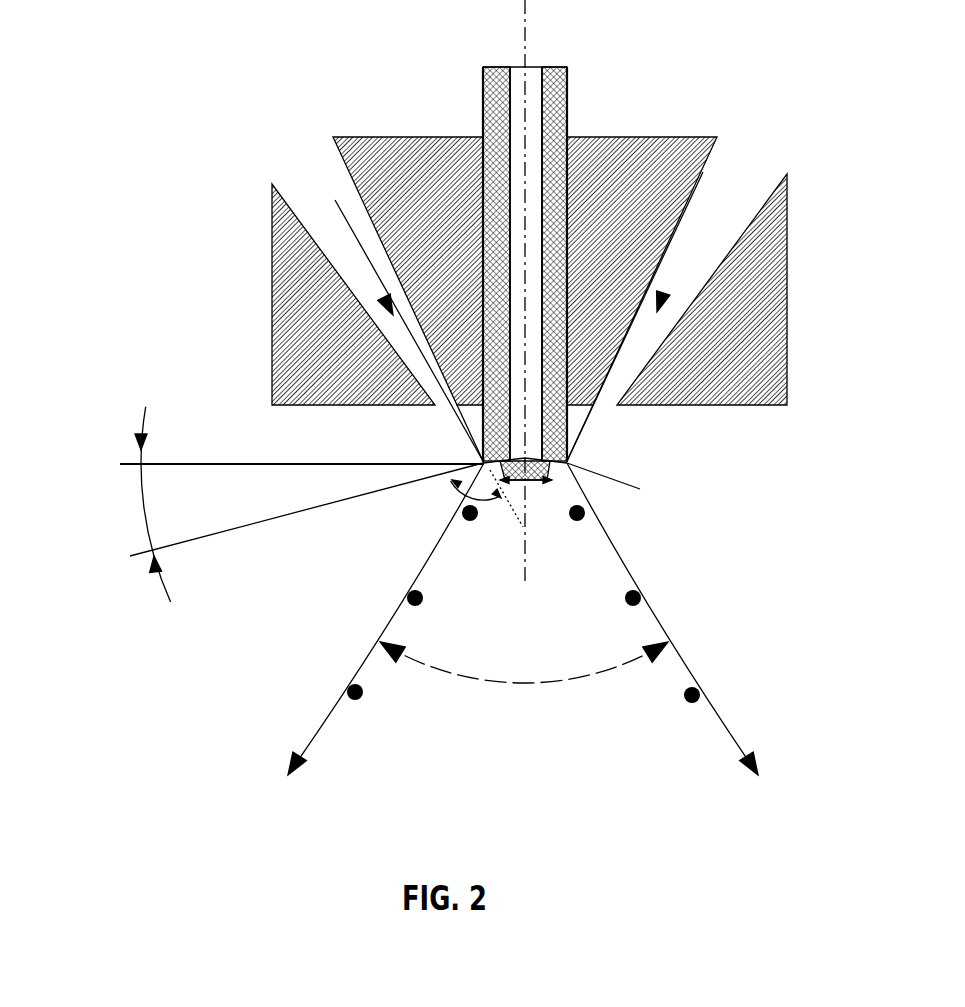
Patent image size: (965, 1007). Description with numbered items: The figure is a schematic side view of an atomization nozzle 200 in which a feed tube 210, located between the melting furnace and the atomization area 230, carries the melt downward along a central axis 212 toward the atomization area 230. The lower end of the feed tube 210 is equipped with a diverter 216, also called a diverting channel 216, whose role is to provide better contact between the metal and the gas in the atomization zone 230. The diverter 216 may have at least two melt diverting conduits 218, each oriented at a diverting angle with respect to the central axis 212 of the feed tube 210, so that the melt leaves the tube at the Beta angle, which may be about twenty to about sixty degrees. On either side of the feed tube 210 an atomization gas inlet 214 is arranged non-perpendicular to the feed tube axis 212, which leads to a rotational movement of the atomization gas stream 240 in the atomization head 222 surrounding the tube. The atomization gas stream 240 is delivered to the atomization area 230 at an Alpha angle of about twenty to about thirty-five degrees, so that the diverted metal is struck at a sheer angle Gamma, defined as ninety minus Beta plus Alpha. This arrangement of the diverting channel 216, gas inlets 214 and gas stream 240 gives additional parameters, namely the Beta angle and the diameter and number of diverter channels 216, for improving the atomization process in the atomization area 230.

The atomization nozzle 200 is at (839, 51).
The feed tube 210 is at (568, 92).
The central axis 212 is at (526, 36).
The atomization gas inlet 214 is at (438, 408).
The diverter 216 is at (567, 462).
The melt diverting conduit 218 is at (496, 466).
The atomization head 222 is at (483, 423).
The atomization area 230 is at (585, 570).
The atomization gas stream 240 is at (348, 236).